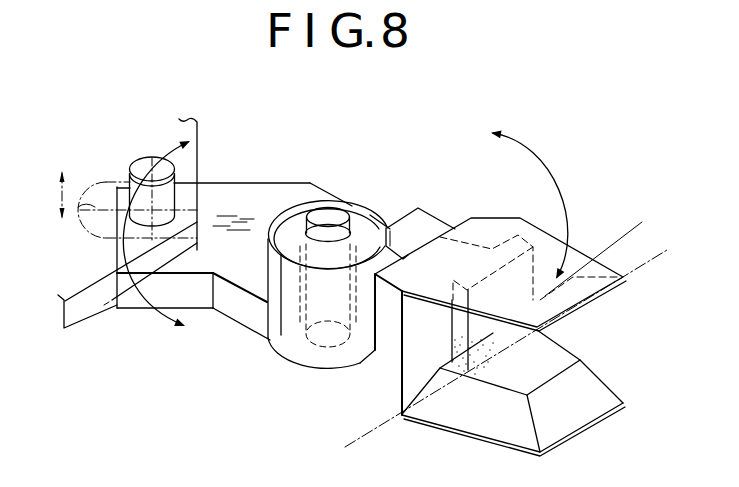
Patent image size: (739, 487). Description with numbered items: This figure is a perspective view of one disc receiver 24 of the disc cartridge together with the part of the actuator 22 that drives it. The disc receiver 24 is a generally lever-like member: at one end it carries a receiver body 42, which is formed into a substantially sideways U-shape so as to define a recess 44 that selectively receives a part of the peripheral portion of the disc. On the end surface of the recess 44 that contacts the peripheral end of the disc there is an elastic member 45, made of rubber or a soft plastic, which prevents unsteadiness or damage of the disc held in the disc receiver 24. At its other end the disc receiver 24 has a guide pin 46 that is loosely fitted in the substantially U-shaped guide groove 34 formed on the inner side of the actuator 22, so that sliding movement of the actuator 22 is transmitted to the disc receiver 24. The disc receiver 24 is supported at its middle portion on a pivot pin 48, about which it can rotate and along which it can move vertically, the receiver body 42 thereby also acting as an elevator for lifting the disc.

The actuator 22 is at (90, 314).
The disc receiver 24 is at (250, 183).
The guide groove 34 is at (90, 213).
The receiver body 42 is at (392, 375).
The recess 44 is at (606, 338).
The elastic member 45 is at (503, 345).
The guide pin 46 is at (144, 165).
The pivot pin 48 is at (338, 220).